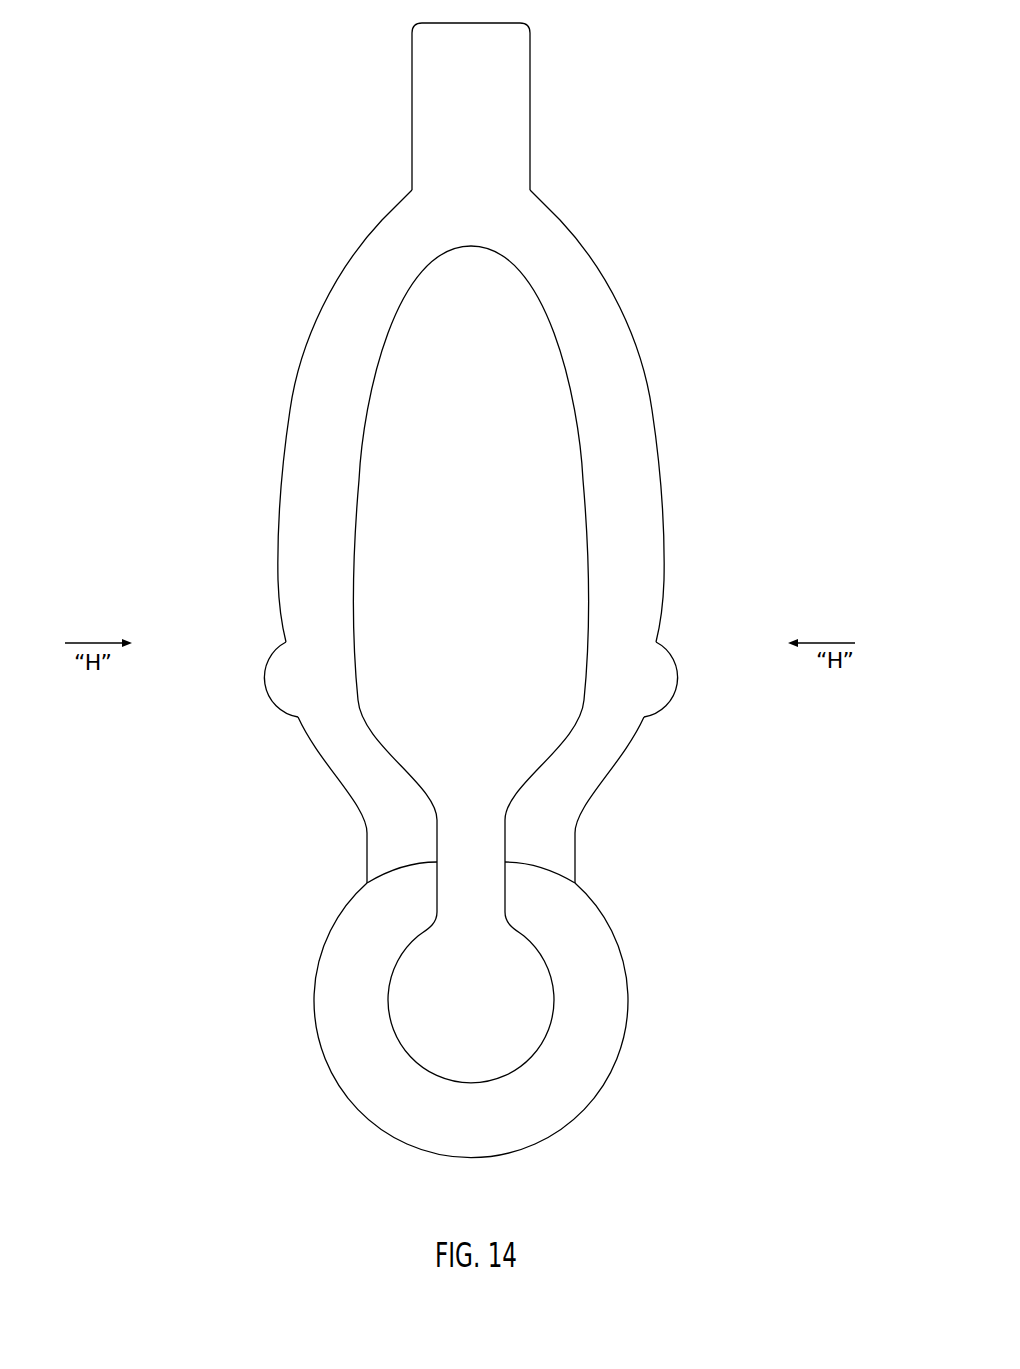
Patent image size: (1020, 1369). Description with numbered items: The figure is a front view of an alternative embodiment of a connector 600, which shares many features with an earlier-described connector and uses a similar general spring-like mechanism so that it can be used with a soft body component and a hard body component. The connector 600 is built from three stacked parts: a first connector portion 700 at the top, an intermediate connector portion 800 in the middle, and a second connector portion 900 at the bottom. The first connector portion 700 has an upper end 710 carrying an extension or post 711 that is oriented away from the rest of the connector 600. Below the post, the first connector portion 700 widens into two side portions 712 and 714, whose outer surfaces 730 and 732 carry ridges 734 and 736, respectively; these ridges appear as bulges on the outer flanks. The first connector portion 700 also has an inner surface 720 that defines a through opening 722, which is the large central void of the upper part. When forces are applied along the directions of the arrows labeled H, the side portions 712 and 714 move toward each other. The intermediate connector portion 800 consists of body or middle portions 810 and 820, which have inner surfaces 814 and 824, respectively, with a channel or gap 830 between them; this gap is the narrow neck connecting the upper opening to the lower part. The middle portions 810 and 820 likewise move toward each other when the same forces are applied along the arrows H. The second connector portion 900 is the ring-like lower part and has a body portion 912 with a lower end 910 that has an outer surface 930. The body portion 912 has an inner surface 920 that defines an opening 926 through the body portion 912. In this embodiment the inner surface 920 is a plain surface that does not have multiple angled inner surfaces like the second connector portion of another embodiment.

The connector 600 is at (730, 55).
The first connector portion 700 is at (317, 315).
The upper end 710 is at (573, 228).
The extension or post 711 is at (502, 95).
The side portion 712 is at (315, 428).
The side portion 714 is at (580, 313).
The inner surface 720 is at (360, 530).
The through opening 722 is at (452, 463).
The outer surface 730 is at (285, 485).
The outer surface 732 is at (648, 380).
The ridge 734 is at (266, 665).
The ridge 736 is at (675, 659).
The intermediate connector portion 800 is at (630, 810).
The middle portion 810 is at (400, 833).
The inner surface 814 is at (368, 880).
The middle portion 820 is at (542, 842).
The inner surface 824 is at (505, 867).
The channel or gap 830 is at (481, 765).
The second connector portion 900 is at (633, 1013).
The lower end 910 is at (550, 1140).
The body portion 912 is at (347, 1028).
The inner surface 920 is at (397, 1035).
The opening 926 is at (452, 978).
The outer surface 930 is at (402, 1155).